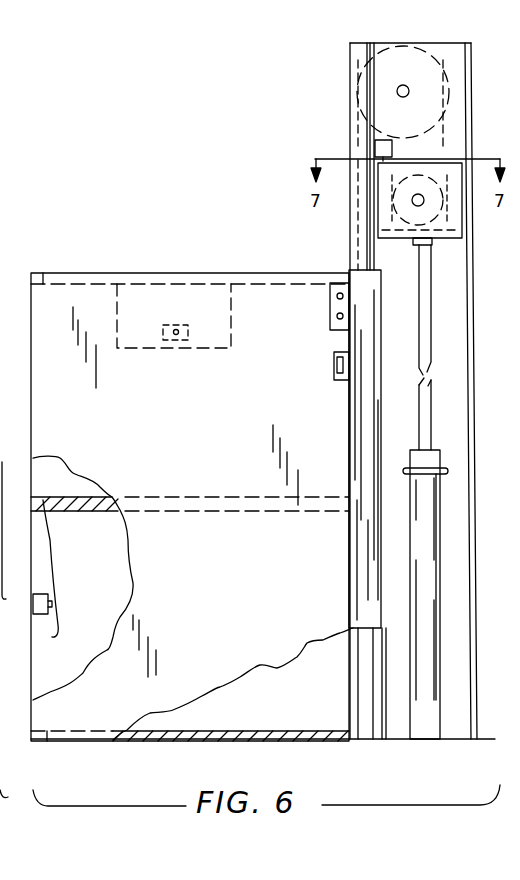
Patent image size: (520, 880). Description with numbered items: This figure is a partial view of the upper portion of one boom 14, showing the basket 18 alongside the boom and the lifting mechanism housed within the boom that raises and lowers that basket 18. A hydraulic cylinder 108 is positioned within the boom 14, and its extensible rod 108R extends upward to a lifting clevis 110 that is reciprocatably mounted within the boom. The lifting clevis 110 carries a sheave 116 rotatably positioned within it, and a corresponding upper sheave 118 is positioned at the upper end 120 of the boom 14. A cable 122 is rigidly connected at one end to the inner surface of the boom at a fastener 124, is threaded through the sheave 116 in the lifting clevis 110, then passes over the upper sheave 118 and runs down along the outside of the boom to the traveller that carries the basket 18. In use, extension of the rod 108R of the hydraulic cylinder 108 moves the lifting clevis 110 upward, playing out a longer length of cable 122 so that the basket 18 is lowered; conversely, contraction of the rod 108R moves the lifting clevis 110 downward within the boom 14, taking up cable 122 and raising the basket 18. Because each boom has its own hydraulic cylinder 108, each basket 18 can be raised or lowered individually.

The boom 14 is at (4, 607).
The basket 18 is at (191, 440).
The hydraulic cylinder 108 is at (428, 615).
The extensible rod 108R is at (420, 265).
The lifting clevis 110 is at (450, 222).
The sheave 116 is at (396, 200).
The upper sheave 118 is at (383, 95).
The upper end 120 is at (463, 50).
The cable 122 is at (448, 138).
The fastener 124 is at (382, 150).